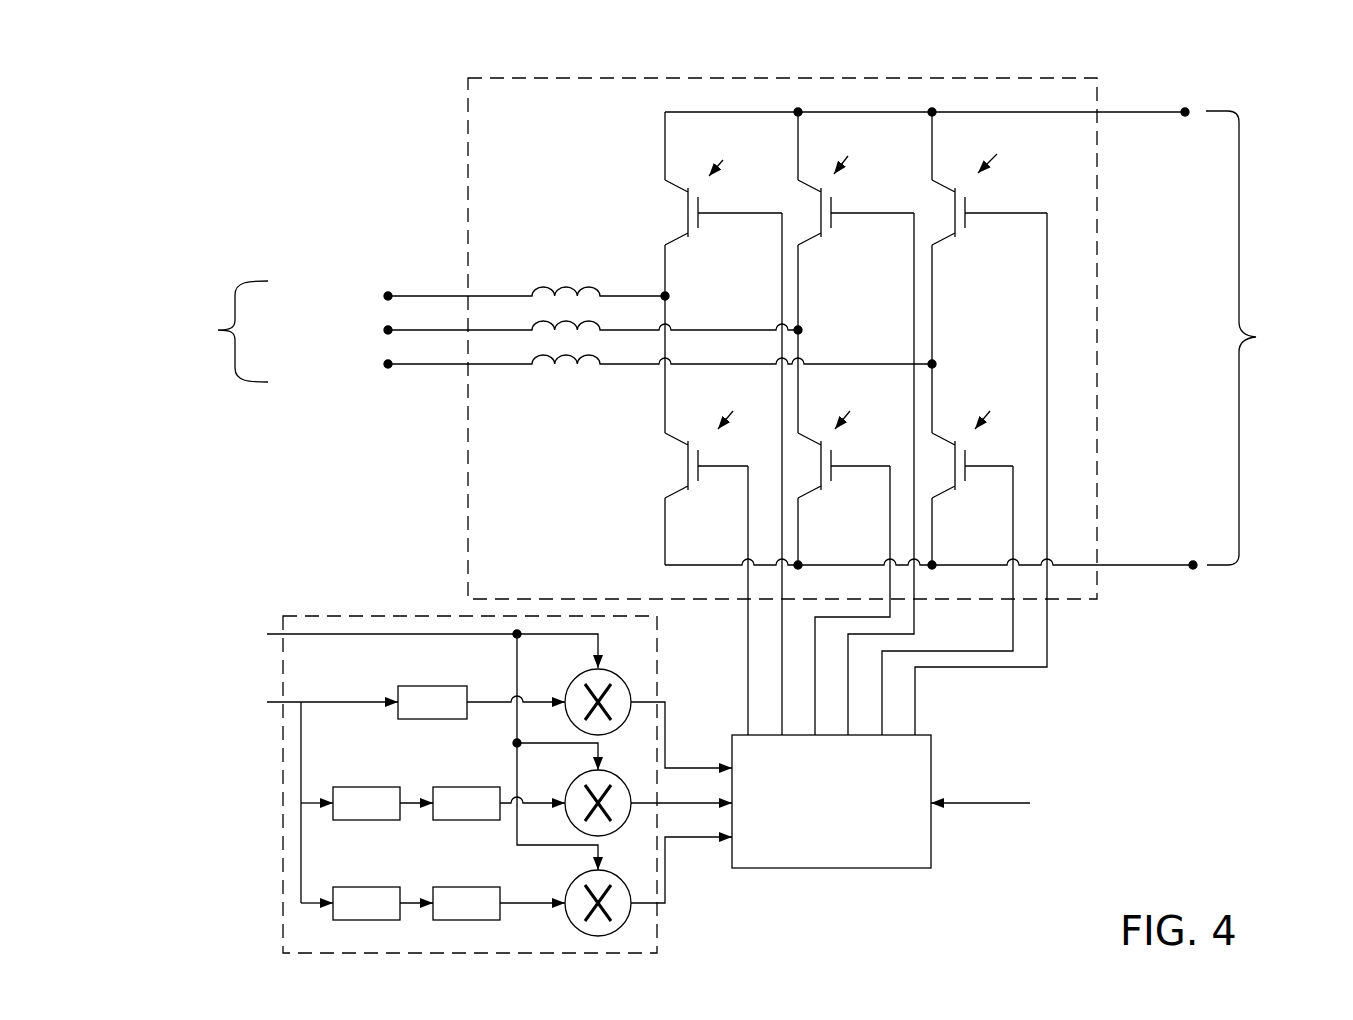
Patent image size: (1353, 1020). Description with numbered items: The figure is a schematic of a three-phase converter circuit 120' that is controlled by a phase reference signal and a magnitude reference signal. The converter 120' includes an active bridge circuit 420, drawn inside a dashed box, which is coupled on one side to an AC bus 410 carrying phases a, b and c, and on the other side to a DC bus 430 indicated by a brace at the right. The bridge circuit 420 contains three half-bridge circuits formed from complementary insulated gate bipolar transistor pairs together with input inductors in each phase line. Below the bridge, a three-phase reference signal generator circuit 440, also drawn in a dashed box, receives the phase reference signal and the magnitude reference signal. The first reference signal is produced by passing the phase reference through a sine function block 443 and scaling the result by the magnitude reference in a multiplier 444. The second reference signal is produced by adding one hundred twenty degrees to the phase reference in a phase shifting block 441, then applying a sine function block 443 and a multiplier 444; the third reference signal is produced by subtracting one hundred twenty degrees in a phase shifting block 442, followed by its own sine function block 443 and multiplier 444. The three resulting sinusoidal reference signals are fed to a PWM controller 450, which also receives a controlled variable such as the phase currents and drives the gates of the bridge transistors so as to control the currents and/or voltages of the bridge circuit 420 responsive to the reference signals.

The three-phase converter circuit 120' is at (726, 334).
The AC bus 410 is at (540, 325).
The active bridge circuit 420 is at (780, 77).
The DC bus 430 is at (1268, 338).
The three-phase reference signal generator circuit 440 is at (283, 782).
The phase shifting block 441 is at (367, 785).
The phase shifting block 442 is at (367, 885).
The sine function block 443 is at (432, 682).
The multiplier 444 is at (583, 670).
The PWM controller 450 is at (832, 868).